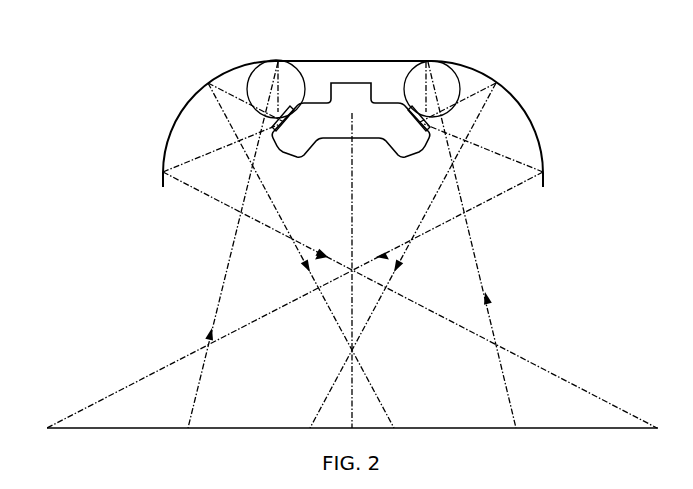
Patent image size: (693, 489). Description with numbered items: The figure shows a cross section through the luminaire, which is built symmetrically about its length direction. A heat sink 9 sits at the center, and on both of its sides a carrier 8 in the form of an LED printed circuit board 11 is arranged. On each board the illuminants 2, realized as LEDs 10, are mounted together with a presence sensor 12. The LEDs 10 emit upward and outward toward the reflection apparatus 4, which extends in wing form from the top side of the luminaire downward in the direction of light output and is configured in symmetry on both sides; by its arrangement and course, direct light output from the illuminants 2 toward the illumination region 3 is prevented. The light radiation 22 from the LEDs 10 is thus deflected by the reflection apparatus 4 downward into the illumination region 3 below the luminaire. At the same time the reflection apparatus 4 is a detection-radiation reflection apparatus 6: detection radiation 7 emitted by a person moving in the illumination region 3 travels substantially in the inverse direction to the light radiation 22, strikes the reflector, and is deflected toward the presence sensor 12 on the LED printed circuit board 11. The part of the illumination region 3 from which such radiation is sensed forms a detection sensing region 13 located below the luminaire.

The illuminant 2 is at (190, 50).
The illumination region 3 is at (352, 407).
The detection sensing region 13 is at (275, 428).
The reflection apparatus 4 is at (370, 124).
The detection-radiation reflection apparatus 6 is at (527, 113).
The detection radiation 7 is at (493, 320).
The carrier 8 is at (351, 74).
The LED printed circuit board 11 is at (293, 62).
The heat sink 9 is at (343, 82).
The LED 10 is at (339, 67).
The presence sensor 12 is at (252, 62).
The light radiation 22 is at (404, 257).